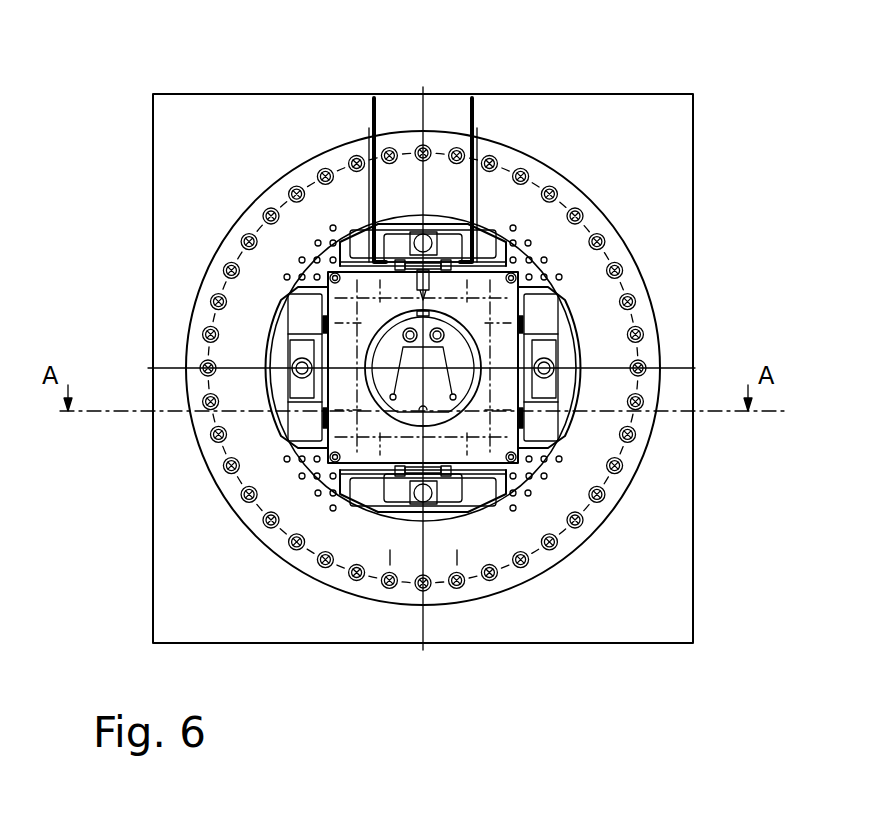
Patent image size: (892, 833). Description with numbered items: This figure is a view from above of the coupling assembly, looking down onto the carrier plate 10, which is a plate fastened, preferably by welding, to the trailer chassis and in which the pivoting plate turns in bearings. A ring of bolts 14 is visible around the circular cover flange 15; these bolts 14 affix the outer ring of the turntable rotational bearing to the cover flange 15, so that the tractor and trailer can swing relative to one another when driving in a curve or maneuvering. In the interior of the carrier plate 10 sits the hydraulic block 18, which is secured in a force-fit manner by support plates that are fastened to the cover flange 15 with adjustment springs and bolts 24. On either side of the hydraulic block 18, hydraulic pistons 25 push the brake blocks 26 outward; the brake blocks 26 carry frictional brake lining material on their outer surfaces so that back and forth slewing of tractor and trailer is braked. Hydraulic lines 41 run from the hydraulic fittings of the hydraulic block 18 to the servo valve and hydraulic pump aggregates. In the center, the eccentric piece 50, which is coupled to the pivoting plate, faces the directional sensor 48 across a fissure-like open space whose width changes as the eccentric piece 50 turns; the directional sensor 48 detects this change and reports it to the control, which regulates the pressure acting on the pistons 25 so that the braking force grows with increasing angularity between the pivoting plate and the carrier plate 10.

The carrier plate 10 is at (644, 110).
The bolts 14 is at (292, 188).
The cover flange 15 is at (222, 265).
The hydraulic block 18 is at (487, 280).
The bolts 24 is at (517, 510).
The hydraulic pistons 25 is at (322, 427).
The brake blocks 26 is at (297, 307).
The hydraulic lines 41 is at (467, 113).
The directional sensor 48 is at (433, 313).
The eccentric piece 50 is at (460, 360).